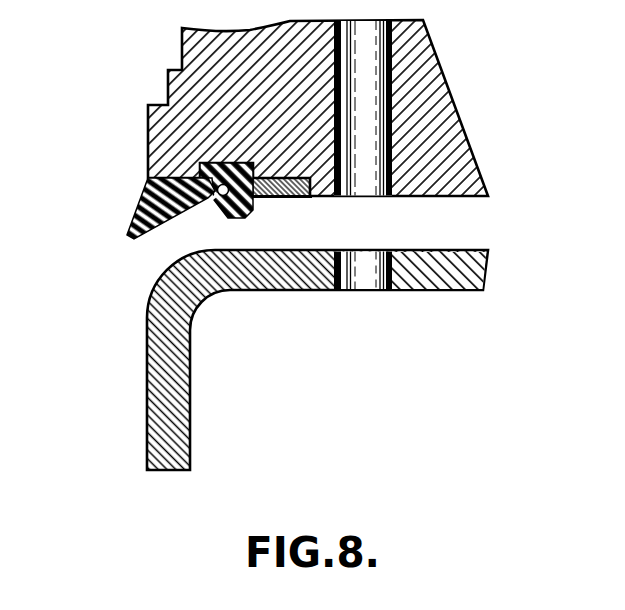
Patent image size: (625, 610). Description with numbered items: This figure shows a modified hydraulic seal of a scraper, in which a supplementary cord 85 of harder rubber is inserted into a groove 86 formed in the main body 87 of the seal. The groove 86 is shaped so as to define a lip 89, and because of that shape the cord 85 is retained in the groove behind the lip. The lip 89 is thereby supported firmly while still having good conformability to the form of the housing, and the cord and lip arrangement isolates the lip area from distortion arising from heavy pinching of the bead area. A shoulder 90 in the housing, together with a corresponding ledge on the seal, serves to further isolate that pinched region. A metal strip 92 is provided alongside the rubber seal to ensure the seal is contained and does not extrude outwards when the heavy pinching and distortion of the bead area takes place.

The supplementary cord 85 is at (214, 200).
The groove 86 is at (217, 201).
The main body of the hydraulic seal 87 is at (148, 188).
The lip 89 is at (129, 234).
The shoulder 90 is at (200, 166).
The metal strip 92 is at (292, 198).